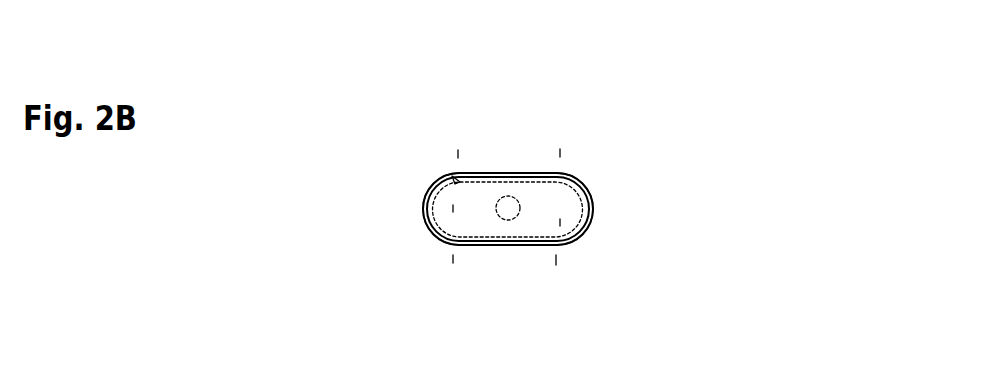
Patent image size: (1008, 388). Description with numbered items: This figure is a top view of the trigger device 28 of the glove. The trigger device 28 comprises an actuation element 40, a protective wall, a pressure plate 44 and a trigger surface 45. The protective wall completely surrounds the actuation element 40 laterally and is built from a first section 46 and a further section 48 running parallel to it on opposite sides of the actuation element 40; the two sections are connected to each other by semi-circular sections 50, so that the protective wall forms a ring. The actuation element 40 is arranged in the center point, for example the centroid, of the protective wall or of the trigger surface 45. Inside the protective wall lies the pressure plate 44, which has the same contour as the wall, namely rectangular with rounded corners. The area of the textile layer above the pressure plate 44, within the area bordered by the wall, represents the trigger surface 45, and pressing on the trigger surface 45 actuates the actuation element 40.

The trigger device 28 is at (616, 143).
The actuation element 40 is at (509, 196).
The pressure plate 44 is at (576, 215).
The trigger surface 45 is at (455, 178).
The first section 46 is at (483, 173).
The further section 48 is at (522, 245).
The semi-circular sections 50 is at (424, 203).